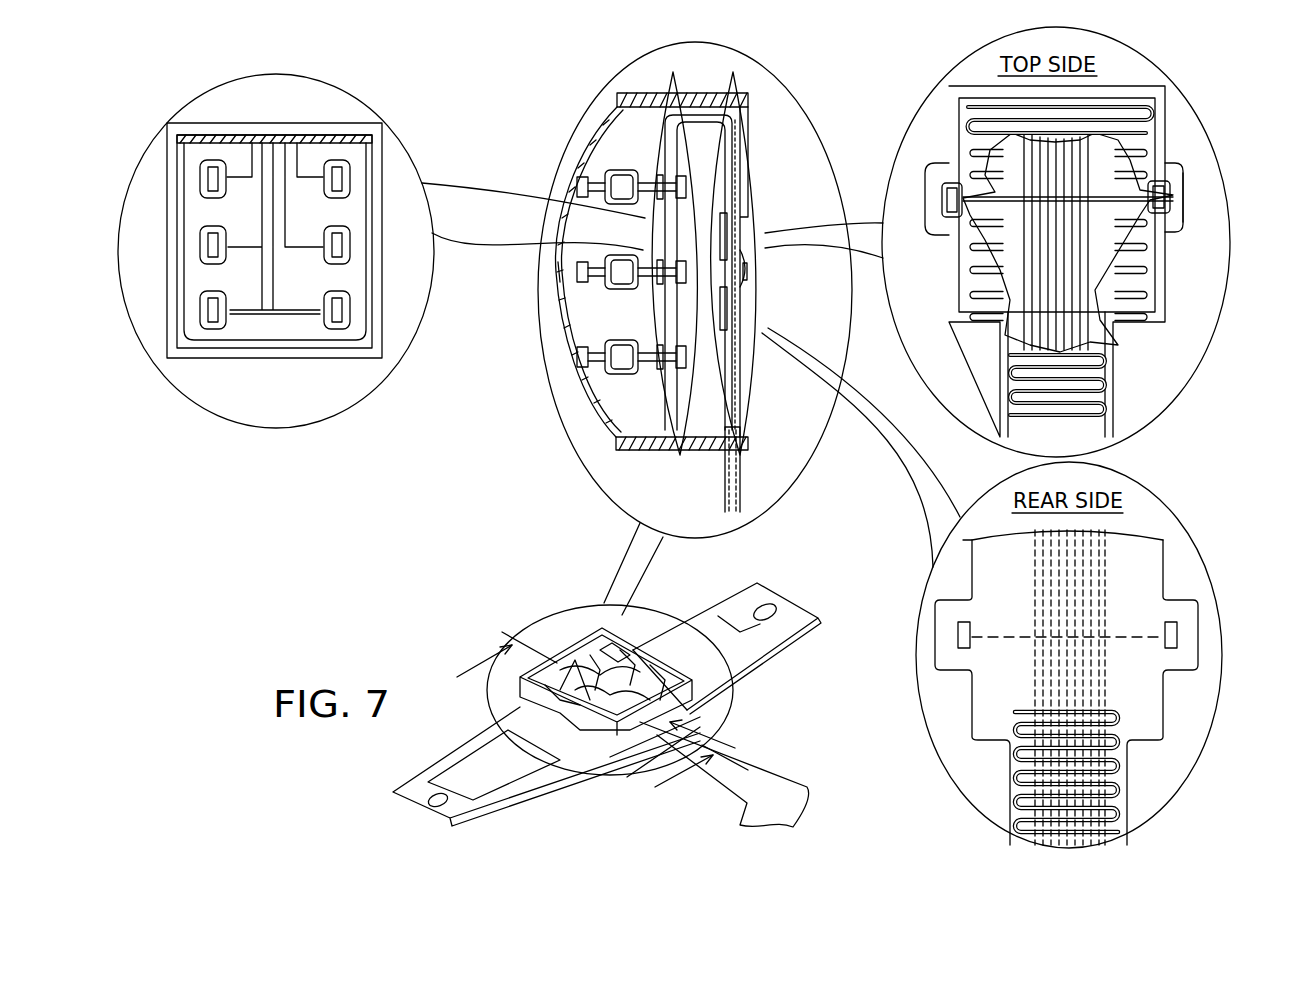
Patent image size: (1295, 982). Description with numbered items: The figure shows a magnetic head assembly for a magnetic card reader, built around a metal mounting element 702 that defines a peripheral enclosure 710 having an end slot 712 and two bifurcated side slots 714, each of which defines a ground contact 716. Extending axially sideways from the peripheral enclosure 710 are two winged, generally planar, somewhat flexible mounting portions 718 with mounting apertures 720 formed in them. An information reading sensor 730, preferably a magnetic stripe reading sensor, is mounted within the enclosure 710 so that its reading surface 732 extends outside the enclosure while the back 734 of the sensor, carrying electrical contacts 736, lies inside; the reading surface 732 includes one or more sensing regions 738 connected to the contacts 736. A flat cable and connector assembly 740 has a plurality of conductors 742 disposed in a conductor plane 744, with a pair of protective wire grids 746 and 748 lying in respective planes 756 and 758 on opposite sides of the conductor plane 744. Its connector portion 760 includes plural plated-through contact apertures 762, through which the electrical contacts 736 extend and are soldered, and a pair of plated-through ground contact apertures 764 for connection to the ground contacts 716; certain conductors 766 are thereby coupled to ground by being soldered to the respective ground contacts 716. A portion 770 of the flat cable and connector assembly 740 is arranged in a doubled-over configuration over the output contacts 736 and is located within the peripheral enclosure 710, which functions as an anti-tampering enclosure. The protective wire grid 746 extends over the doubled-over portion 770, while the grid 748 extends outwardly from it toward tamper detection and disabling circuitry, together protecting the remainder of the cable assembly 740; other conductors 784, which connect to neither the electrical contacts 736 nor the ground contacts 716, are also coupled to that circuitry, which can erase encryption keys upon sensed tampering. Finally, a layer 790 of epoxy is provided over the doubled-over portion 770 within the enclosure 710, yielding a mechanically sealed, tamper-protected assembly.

The mounting element 702 is at (455, 618).
The peripheral enclosure 710 is at (617, 98).
The end slot 712 is at (722, 745).
The bifurcated side slots 714 is at (585, 660).
The ground contact 716 is at (747, 278).
The mounting portions 718 is at (413, 790).
The mounting apertures 720 is at (432, 803).
The information reading sensor 730 is at (612, 393).
The reading surface 732 is at (562, 313).
The back of the sensor 734 is at (686, 306).
The electrical contacts 736 is at (215, 306).
The sensing regions 738 is at (583, 187).
The flat cable and connector assembly 740 is at (810, 770).
The conductors 742 is at (300, 175).
The conductor plane 744 is at (1100, 150).
The protective wire grid 746 is at (740, 468).
The protective wire grid 748 is at (725, 495).
The plane 756 is at (1163, 318).
The plane 758 is at (1128, 733).
The connector portion 760 is at (183, 203).
The plated-through contact apertures 762 is at (340, 330).
The plated-through ground contact apertures 764 is at (1170, 203).
The ground conductors 766 is at (980, 153).
The doubled-over portion 770 is at (747, 237).
The tamper detection conductors 784 is at (1110, 313).
The layer of epoxy 790 is at (662, 678).